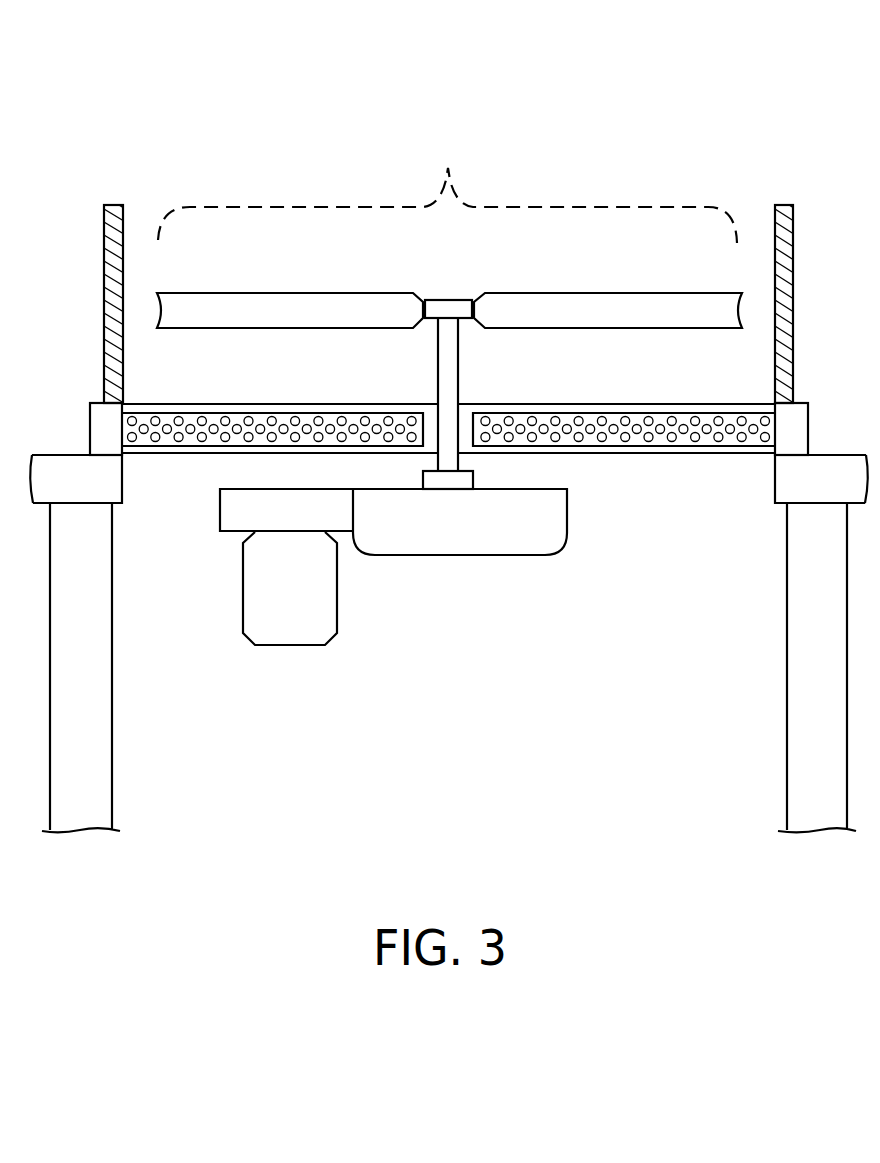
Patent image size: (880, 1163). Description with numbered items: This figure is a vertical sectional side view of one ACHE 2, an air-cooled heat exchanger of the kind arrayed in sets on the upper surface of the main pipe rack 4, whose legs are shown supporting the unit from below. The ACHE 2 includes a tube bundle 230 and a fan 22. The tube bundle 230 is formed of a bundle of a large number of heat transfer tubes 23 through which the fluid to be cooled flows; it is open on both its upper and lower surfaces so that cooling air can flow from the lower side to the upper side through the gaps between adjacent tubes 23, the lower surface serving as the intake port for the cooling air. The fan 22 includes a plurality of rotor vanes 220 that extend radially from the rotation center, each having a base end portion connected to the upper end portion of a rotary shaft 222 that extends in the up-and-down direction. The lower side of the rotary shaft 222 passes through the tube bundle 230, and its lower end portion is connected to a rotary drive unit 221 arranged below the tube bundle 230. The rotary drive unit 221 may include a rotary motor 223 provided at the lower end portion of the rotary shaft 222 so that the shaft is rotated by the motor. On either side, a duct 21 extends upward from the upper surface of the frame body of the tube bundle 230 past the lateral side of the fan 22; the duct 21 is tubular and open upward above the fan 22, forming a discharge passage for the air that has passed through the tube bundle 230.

The ACHE 2 is at (744, 80).
The main pipe rack 4 is at (112, 685).
The duct 21 is at (104, 261).
The fan 22 is at (334, 184).
The tubes 23 is at (250, 418).
The rotor vanes 220 is at (316, 278).
The rotary drive unit 221 is at (476, 652).
The rotary shaft 222 is at (459, 358).
The rotary motor 223 is at (290, 645).
The tube bundle 230 is at (337, 390).